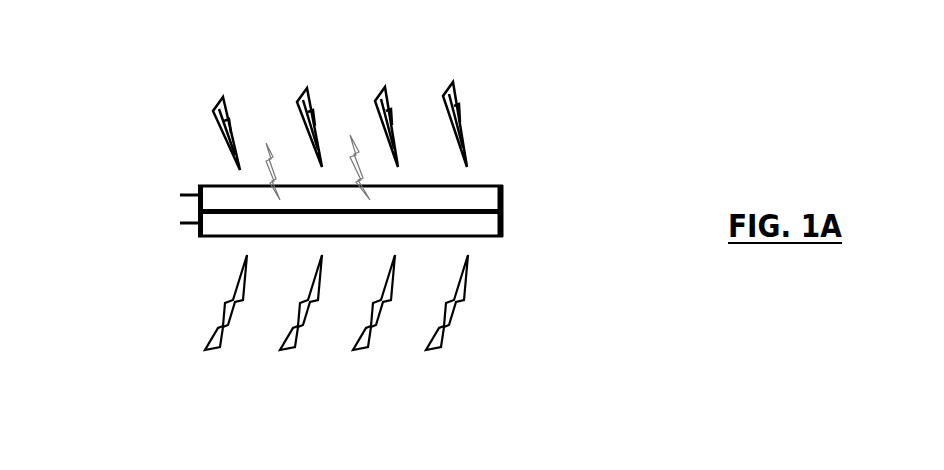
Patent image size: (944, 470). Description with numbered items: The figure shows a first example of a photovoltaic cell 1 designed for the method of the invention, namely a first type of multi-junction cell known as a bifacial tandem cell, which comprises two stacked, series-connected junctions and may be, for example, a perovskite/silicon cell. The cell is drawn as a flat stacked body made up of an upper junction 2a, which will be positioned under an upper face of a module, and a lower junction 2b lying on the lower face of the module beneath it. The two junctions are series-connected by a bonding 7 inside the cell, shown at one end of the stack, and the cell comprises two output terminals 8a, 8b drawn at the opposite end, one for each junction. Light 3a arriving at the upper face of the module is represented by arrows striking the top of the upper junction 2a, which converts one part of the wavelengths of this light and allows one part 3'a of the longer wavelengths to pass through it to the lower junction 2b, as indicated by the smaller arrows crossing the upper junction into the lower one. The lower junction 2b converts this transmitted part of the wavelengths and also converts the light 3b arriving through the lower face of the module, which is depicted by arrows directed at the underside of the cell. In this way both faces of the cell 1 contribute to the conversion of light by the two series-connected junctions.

The photovoltaic cell 1 is at (352, 180).
The upper junction 2a is at (482, 197).
The lower junction 2b is at (483, 227).
The light received at the upper face 3a is at (227, 107).
The part of the longer wavelengths of the light 3'a is at (318, 118).
The light received at the lower face 3b is at (208, 338).
The bonding 7 is at (503, 190).
The output terminal 8a is at (184, 194).
The output terminal 8b is at (184, 224).